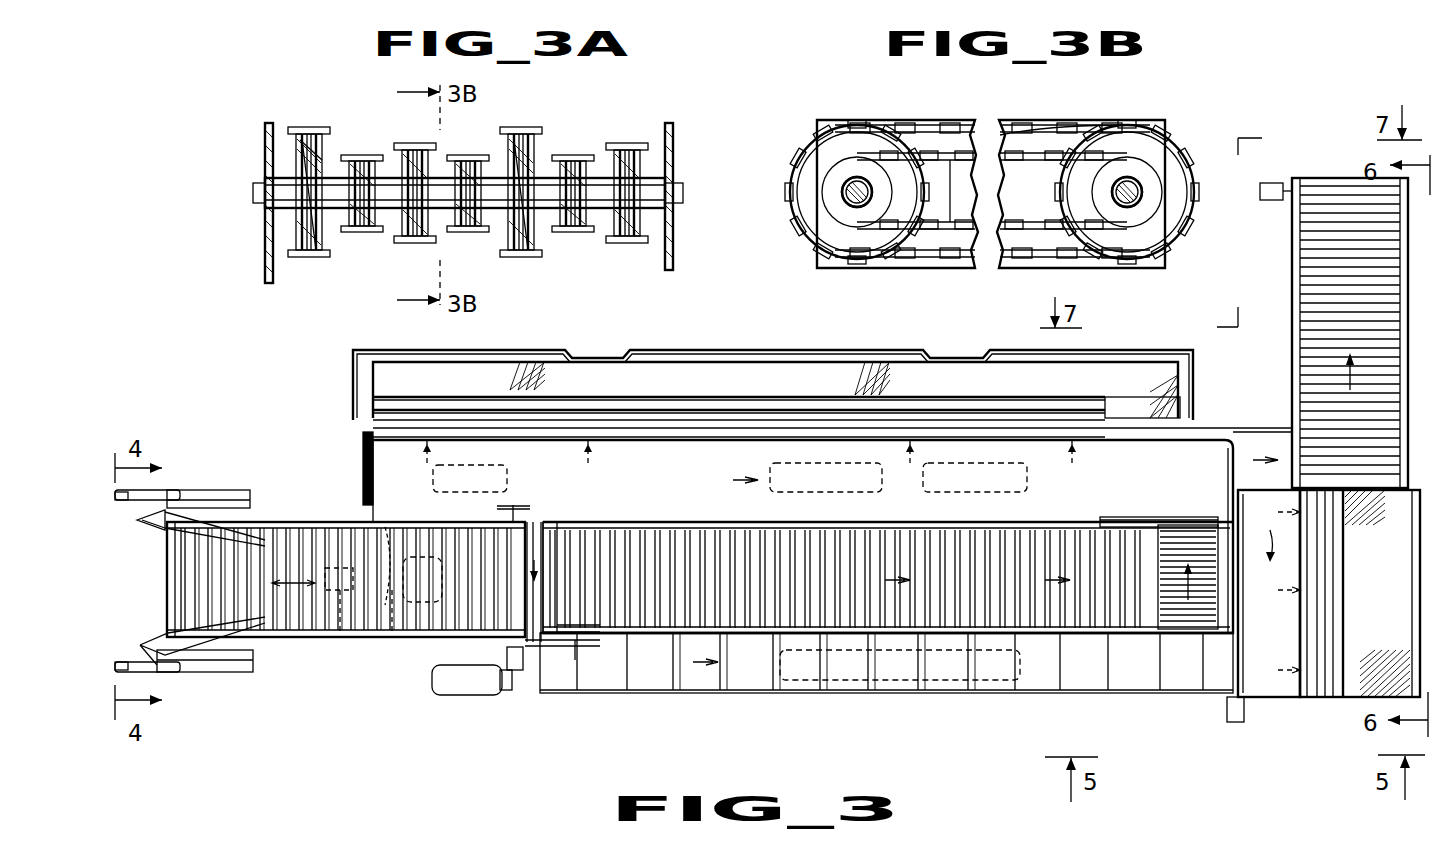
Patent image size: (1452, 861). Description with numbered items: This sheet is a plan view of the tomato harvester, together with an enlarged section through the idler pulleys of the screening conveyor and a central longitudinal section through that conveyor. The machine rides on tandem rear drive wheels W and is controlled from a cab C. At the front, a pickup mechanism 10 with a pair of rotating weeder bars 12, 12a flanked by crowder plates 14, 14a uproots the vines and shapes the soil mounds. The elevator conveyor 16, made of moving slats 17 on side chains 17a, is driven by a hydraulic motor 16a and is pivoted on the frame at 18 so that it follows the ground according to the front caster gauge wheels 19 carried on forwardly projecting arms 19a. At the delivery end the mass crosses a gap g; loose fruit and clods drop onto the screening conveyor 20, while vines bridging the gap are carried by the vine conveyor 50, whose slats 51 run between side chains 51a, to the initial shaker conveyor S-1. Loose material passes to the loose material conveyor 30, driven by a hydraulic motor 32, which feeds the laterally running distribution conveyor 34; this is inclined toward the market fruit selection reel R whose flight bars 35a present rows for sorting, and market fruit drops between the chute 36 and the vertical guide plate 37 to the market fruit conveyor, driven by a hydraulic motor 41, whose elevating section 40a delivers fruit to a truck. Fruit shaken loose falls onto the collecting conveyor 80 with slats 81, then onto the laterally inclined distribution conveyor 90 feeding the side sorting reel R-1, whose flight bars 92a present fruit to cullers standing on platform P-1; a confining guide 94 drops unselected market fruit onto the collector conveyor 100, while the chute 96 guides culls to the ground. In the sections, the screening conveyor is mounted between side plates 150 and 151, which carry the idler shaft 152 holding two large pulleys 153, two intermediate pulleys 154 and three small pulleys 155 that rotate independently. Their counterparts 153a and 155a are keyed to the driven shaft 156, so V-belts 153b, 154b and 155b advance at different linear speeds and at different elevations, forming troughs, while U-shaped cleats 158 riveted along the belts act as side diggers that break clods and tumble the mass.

In FIG. 3, the pickup mechanism 10 is at (320, 603).
In FIG. 3, the rotating weeder bar 12 is at (167, 549).
In FIG. 3, the rotating weeder bar 12a is at (183, 572).
In FIG. 3, the crowder plate 14 is at (190, 532).
In FIG. 3, the crowder plate 14a is at (192, 620).
In FIG. 3, the elevator conveyor 16 is at (390, 532).
In FIG. 3, the hydraulic motor 16a is at (503, 672).
In FIG. 3, the slats 17 is at (268, 632).
In FIG. 3, the side chains 17a is at (318, 522).
In FIG. 3, the pivot mounting 18 is at (518, 507).
In FIG. 3, the front caster gauge wheels 19 is at (130, 490).
In FIG. 3, the forwardly projecting arms 19a is at (228, 500).
In FIG. 3A, the screening conveyor 20 is at (598, 105).
In FIG. 3B, the screening conveyor 20 is at (1116, 105).
In FIG. 3, the screening conveyor 20 is at (552, 650).
In FIG. 3, the loose material conveyor 30 is at (676, 698).
In FIG. 3, the hydraulic motor 32 is at (1244, 720).
In FIG. 3, the distribution conveyor 34 is at (1280, 616).
In FIG. 3, the flight bars 35a is at (1315, 548).
In FIG. 3, the chute 36 is at (1332, 617).
In FIG. 3, the vertical guide plate 37 is at (1340, 596).
In FIG. 3, the elevating section of market fruit conveyor 40a is at (1298, 265).
In FIG. 3, the hydraulic motor 41 is at (1270, 183).
In FIG. 3, the vine conveyor 50 is at (888, 571).
In FIG. 3, the slats 51 is at (637, 527).
In FIG. 3, the side chains 51a is at (560, 527).
In FIG. 3, the collecting conveyor 80 is at (1188, 630).
In FIG. 3, the slats 81 is at (1195, 527).
In FIG. 3, the distribution conveyor 90 is at (1130, 442).
In FIG. 3, the flight bars 92a is at (563, 432).
In FIG. 3, the confining guide 94 is at (805, 420).
In FIG. 3, the drop plate or chute 96 is at (1045, 398).
In FIG. 3, the collector conveyor 100 is at (1259, 432).
In FIG. 3A, the side plate 150 is at (265, 150).
In FIG. 3A, the side plate 151 is at (673, 128).
In FIG. 3B, the side plate 151 is at (995, 118).
In FIG. 3A, the idler shaft 152 is at (268, 212).
In FIG. 3B, the idler shaft 152 is at (848, 205).
In FIG. 3A, the large diameter pulleys 153 is at (322, 152).
In FIG. 3B, the large diameter pulleys 153 is at (838, 140).
In FIG. 3B, the large diameter pulley 153a is at (1148, 140).
In FIG. 3A, the V-belts 153b is at (312, 140).
In FIG. 3B, the V-belts 153b is at (1040, 140).
In FIG. 3A, the intermediate diameter pulleys 154 is at (398, 152).
In FIG. 3A, the V-belts 154b is at (425, 148).
In FIG. 3A, the small diameter pulleys 155 is at (565, 165).
In FIG. 3B, the small diameter pulleys 155 is at (840, 185).
In FIG. 3B, the small diameter pulley 155a is at (1140, 178).
In FIG. 3A, the V-belts 155b is at (470, 232).
In FIG. 3B, the V-belts 155b is at (960, 165).
In FIG. 3B, the driven shaft 156 is at (1112, 193).
In FIG. 3A, the U-shaped cleats 158 is at (518, 140).
In FIG. 3B, the U-shaped cleats 158 is at (940, 128).
In FIG. 3, the cab C is at (406, 634).
In FIG. 3, the tandem rear drive wheels W is at (508, 468).
In FIG. 3, the market fruit selection reel R is at (1315, 572).
In FIG. 3, the gap g is at (535, 530).
In FIG. 3, the initial shaker conveyor S-1 is at (1135, 520).
In FIG. 3, the platform P-1 is at (458, 395).
In FIG. 3, the side sorting reel R-1 is at (685, 427).